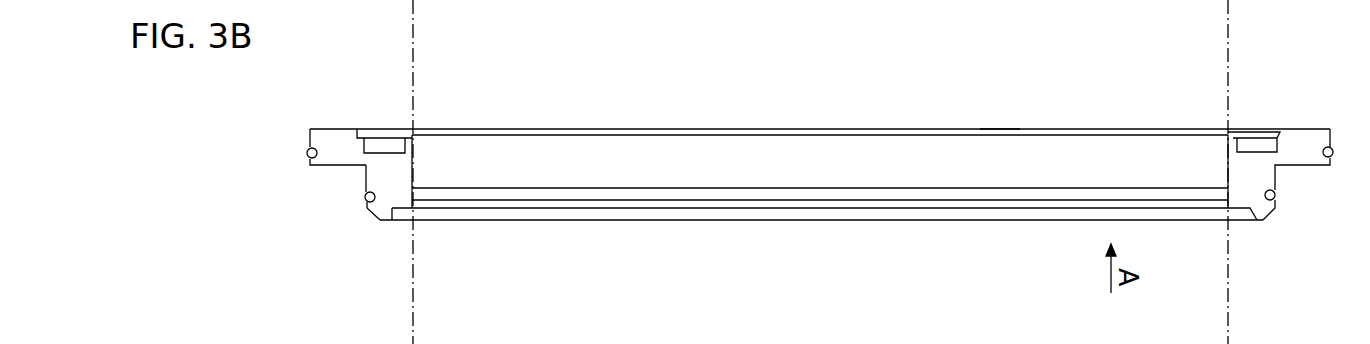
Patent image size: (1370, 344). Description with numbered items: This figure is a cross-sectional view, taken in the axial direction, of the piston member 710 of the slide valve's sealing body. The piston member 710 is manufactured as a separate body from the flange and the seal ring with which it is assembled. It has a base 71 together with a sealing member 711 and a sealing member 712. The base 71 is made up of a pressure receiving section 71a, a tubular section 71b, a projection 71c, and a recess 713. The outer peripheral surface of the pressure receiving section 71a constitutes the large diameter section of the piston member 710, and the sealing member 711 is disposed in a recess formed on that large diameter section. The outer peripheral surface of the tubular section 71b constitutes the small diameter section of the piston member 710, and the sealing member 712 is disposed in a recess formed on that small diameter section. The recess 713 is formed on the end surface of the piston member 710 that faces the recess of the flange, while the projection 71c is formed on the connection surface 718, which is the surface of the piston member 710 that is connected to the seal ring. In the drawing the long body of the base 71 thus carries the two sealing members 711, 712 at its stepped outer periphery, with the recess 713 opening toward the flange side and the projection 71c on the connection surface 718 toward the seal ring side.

The base 71 is at (705, 128).
The piston member 710 is at (1000, 118).
The sealing member 711 is at (307, 149).
The sealing member 712 is at (365, 200).
The recess 713 is at (389, 152).
The connection surface 718 is at (369, 212).
The pressure receiving section 71a is at (337, 150).
The tubular section 71b is at (388, 178).
The projection 71c is at (387, 221).